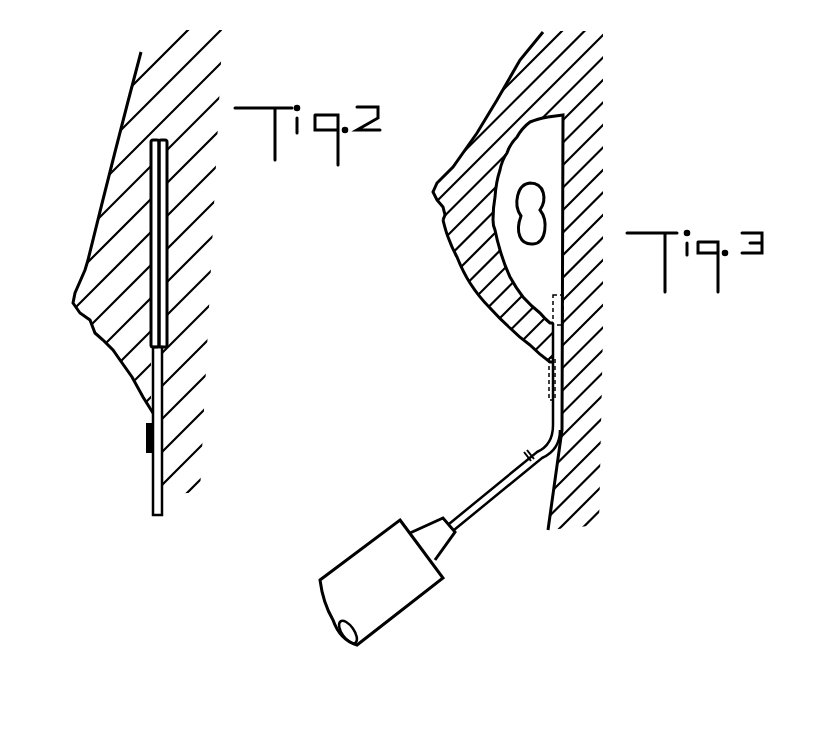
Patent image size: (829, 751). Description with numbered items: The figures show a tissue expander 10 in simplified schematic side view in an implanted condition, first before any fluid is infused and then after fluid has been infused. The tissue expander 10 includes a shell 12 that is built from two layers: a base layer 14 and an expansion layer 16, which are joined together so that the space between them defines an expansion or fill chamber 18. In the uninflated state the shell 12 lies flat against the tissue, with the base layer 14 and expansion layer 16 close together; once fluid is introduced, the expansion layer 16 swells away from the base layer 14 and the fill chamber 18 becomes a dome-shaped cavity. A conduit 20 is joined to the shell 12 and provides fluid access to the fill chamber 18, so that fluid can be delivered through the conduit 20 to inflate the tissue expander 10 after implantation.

In FIG. 2, the tissue expander device 10 is at (182, 300).
In FIG. 3, the tissue expander device 10 is at (528, 117).
In FIG. 2, the shell 12 is at (148, 180).
In FIG. 3, the shell 12 is at (495, 253).
In FIG. 2, the base layer 14 is at (162, 213).
In FIG. 3, the base layer 14 is at (565, 148).
In FIG. 2, the expansion layer 16 is at (152, 237).
In FIG. 3, the expansion layer 16 is at (494, 313).
In FIG. 3, the fill chamber 18 is at (530, 208).
In FIG. 2, the conduit 20 is at (160, 488).
In FIG. 3, the conduit 20 is at (542, 440).